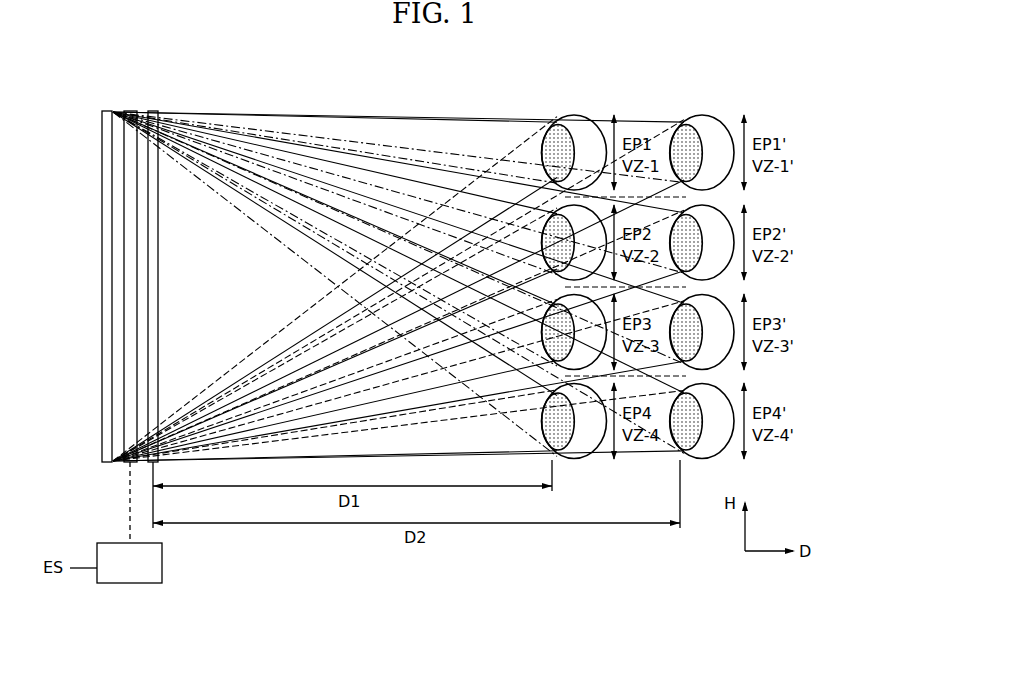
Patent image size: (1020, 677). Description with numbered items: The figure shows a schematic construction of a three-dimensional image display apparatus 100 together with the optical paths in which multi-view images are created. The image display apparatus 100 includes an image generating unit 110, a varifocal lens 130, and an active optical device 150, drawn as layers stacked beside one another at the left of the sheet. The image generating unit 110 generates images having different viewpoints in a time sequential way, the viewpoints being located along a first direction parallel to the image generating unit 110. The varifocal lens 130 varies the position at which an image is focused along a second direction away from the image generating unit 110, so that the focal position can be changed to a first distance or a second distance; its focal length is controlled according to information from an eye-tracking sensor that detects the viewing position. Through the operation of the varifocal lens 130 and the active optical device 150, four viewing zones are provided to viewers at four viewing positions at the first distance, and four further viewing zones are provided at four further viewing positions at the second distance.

The 3D image display apparatus 100 is at (292, 81).
The image generating unit 110 is at (107, 111).
The varifocal lens 130 is at (131, 111).
The active optical device 150 is at (155, 111).